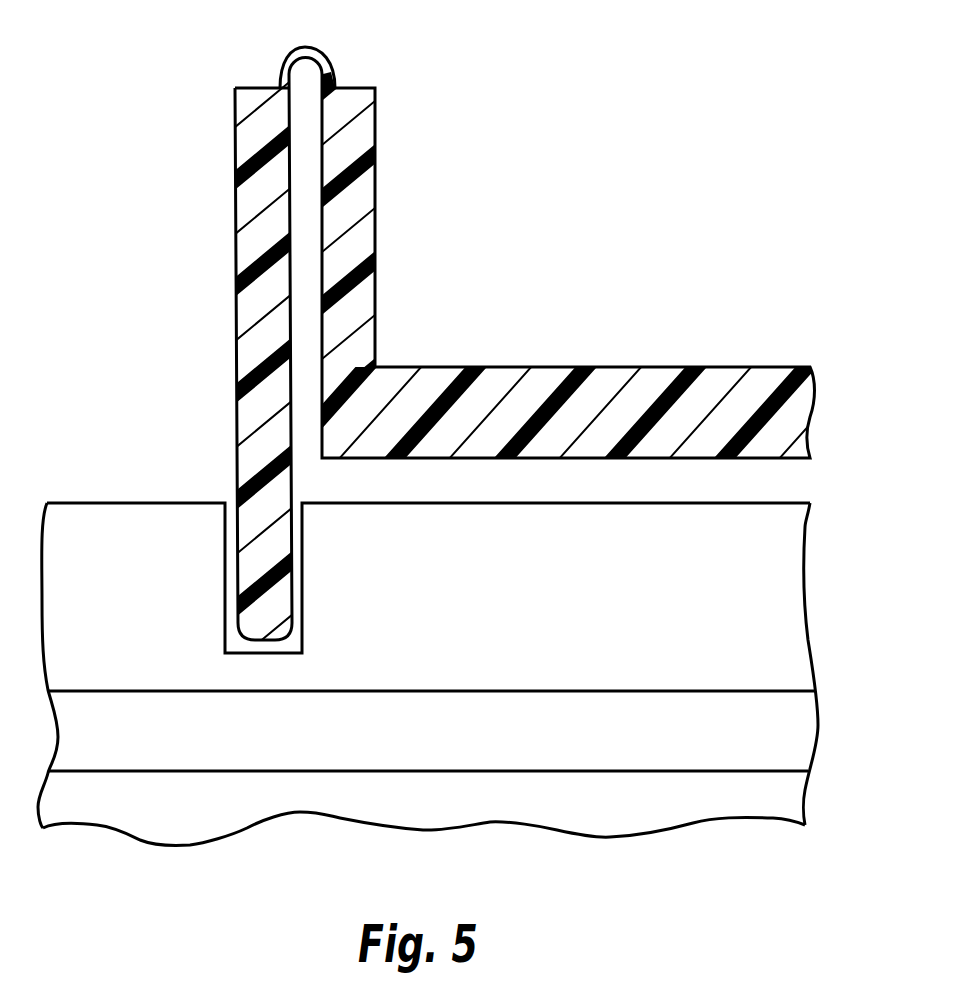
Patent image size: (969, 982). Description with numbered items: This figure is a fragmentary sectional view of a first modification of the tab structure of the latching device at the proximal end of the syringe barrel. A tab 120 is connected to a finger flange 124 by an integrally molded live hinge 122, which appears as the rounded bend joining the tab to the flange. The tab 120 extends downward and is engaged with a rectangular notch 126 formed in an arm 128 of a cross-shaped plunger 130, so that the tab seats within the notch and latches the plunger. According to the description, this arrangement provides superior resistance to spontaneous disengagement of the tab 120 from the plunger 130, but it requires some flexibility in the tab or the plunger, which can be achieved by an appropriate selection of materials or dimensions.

The tab 120 is at (252, 247).
The live hinge 122 is at (326, 65).
The finger flange 124 is at (362, 190).
The rectangular notch 126 is at (299, 562).
The arm 128 is at (147, 526).
The cross-shaped plunger 130 is at (631, 757).